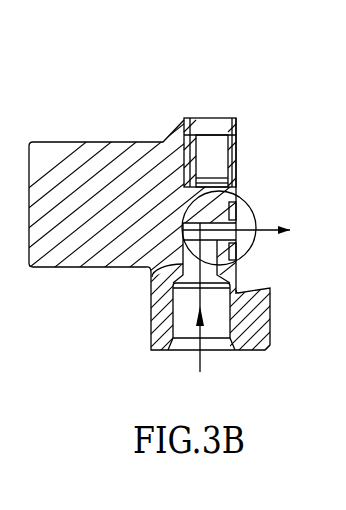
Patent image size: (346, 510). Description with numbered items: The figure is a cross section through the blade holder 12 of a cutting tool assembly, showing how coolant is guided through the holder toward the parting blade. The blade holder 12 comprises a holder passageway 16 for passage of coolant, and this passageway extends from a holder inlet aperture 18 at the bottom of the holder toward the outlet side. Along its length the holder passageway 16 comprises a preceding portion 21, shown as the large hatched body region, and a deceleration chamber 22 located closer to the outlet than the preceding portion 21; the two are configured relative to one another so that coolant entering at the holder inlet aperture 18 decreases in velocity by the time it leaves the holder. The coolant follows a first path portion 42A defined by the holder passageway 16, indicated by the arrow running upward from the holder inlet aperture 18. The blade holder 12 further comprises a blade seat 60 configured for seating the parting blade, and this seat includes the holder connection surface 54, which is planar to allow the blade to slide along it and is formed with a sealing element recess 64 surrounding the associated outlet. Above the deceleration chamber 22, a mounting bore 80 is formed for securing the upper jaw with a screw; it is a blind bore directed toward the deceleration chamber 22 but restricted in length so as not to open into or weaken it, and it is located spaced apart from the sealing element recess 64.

The blade holder 12 is at (242, 68).
The mounting bore 80 is at (223, 125).
The holder connection surface 54 is at (252, 163).
The deceleration chamber 22 is at (218, 210).
The sealing element recess 64 is at (237, 213).
The blade seat 60 is at (258, 275).
The preceding portion 21 is at (149, 271).
The holder inlet aperture 18 is at (222, 346).
The holder passageway 16 is at (176, 362).
The first path portion 42A is at (202, 362).